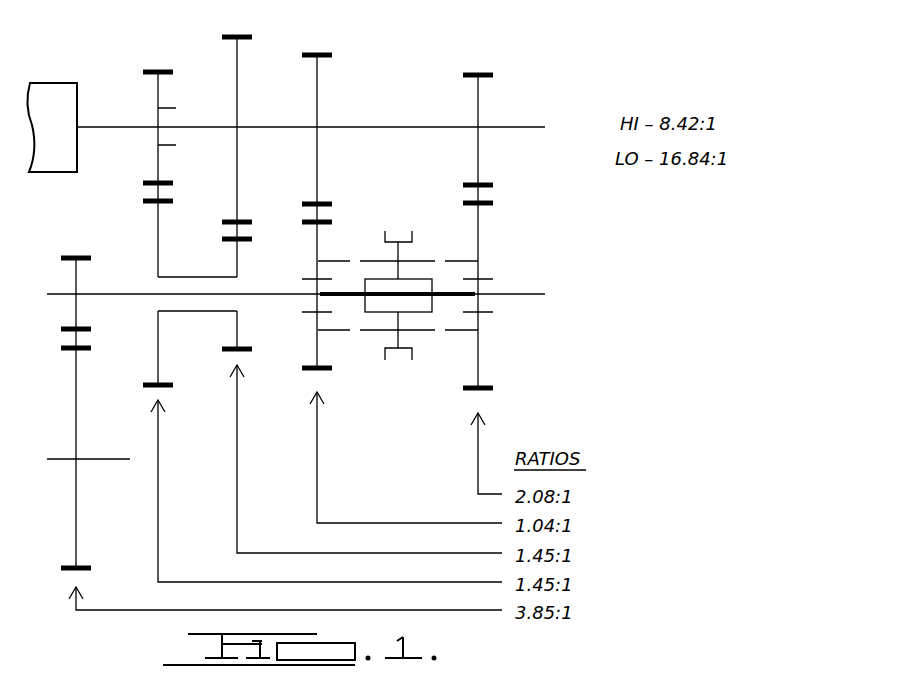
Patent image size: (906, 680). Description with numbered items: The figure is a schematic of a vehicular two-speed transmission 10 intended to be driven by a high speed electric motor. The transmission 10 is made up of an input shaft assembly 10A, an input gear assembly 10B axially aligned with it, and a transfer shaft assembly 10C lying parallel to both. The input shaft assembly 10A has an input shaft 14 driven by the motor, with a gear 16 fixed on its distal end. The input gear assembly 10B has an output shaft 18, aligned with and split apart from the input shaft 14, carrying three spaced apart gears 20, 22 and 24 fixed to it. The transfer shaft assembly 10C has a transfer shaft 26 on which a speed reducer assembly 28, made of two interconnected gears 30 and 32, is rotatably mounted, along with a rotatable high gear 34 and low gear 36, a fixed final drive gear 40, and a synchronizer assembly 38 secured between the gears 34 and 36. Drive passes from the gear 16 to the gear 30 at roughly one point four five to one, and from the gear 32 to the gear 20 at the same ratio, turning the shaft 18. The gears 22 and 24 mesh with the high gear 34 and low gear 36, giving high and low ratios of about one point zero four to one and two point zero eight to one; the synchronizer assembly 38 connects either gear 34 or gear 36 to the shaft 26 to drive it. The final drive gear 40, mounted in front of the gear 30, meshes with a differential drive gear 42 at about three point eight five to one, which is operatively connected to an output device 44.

The two-speed transmission 10 is at (298, 314).
The input shaft assembly 10A is at (121, 154).
The input gear assembly 10B is at (265, 203).
The transfer shaft assembly 10C is at (79, 376).
The input shaft 14 is at (116, 130).
The gear 16 is at (160, 70).
The output shaft 18 is at (270, 127).
The gear 20 is at (245, 37).
The gear 22 is at (332, 55).
The gear 24 is at (482, 75).
The transfer shaft 26 is at (265, 294).
The speed reducer assembly 28 is at (185, 276).
The gear 30 is at (143, 201).
The gear 32 is at (253, 222).
The high gear 34 is at (332, 222).
The low gear 36 is at (493, 203).
The synchronizer assembly 38 is at (419, 245).
The final drive gear 40 is at (77, 258).
The differential drive gear 42 is at (91, 346).
The output device 44 is at (98, 465).